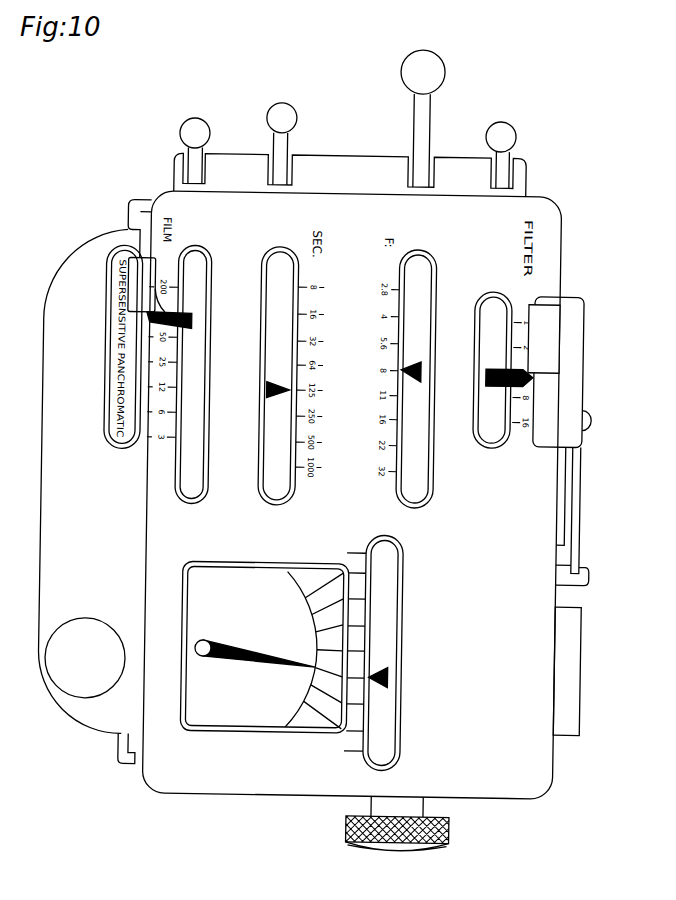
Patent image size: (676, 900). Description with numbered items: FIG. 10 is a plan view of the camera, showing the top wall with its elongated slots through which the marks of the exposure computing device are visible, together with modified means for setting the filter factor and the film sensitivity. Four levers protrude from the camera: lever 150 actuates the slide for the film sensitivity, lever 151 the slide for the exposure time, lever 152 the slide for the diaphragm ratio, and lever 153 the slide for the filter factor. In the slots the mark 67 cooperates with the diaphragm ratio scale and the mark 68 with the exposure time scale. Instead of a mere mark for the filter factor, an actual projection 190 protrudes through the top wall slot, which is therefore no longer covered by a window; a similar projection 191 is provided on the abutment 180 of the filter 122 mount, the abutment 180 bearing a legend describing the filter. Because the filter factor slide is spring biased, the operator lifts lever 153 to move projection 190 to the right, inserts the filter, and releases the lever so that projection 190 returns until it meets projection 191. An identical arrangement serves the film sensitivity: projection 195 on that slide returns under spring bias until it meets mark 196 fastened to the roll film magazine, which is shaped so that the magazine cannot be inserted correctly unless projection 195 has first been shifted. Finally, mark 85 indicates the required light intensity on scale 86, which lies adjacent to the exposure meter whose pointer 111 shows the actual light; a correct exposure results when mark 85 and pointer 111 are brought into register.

The lever 150 is at (185, 133).
The lever 151 is at (279, 116).
The rotatable lever 152 is at (407, 66).
The lever 153 is at (498, 131).
The mark 196 is at (140, 280).
The projection 195 is at (189, 322).
The mark 68 is at (281, 381).
The mark 67 is at (409, 361).
The projection 190 is at (495, 365).
The projection 191 is at (546, 314).
The abutment 180 is at (578, 318).
The filter 122 is at (580, 499).
The scale 86 is at (352, 551).
The mark 85 is at (383, 665).
The pointer 111 is at (240, 644).